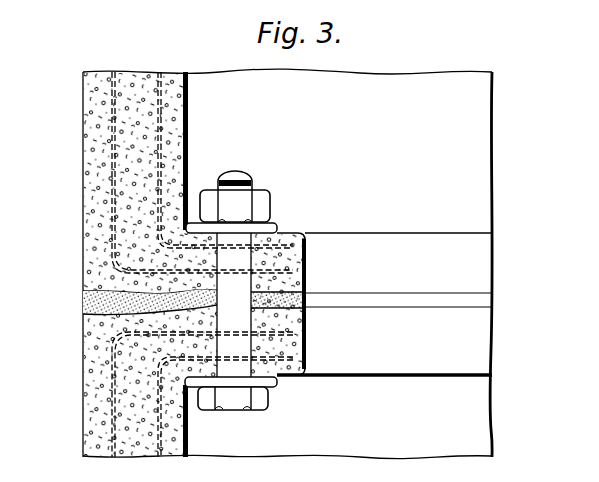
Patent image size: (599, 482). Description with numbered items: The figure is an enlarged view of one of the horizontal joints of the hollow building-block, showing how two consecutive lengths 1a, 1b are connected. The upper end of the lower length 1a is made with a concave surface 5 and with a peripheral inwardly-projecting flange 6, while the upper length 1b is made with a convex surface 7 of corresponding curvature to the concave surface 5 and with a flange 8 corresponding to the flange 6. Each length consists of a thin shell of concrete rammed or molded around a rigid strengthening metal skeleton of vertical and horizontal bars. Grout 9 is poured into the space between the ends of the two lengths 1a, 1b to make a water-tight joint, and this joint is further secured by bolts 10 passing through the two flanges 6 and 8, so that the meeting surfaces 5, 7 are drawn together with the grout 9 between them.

The length 1a is at (97, 417).
The length 1b is at (95, 130).
The concave surface 5 is at (96, 313).
The peripheral inwardly-projecting flange 6 is at (309, 336).
The convex surface 7 is at (103, 294).
The flange 8 is at (309, 253).
The grout 9 is at (83, 300).
The bolts 10 is at (250, 186).